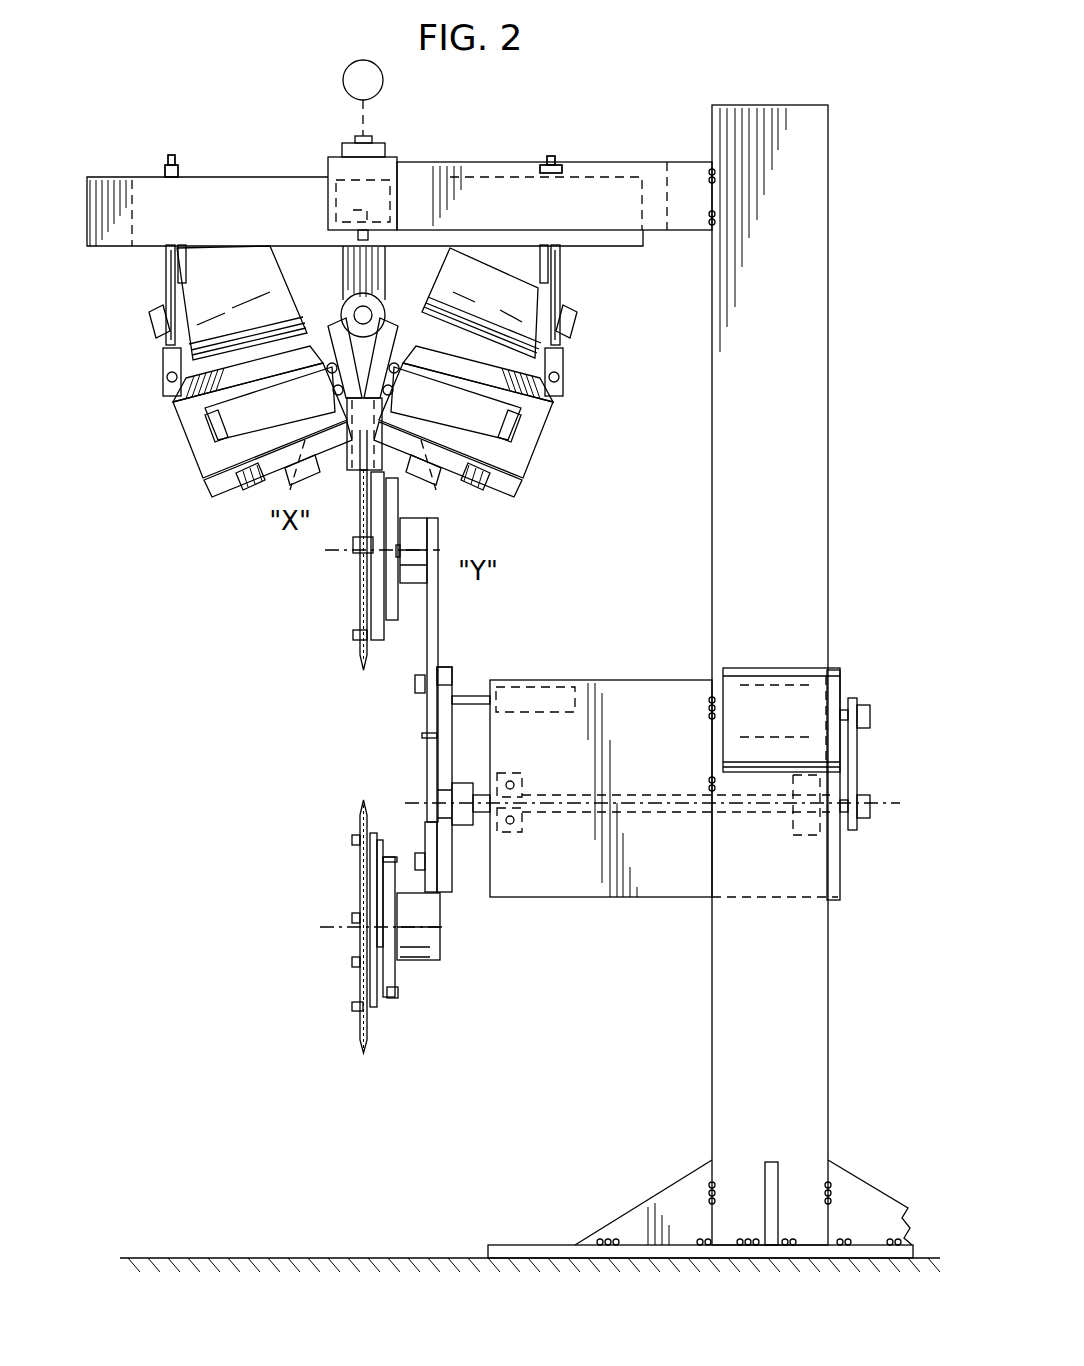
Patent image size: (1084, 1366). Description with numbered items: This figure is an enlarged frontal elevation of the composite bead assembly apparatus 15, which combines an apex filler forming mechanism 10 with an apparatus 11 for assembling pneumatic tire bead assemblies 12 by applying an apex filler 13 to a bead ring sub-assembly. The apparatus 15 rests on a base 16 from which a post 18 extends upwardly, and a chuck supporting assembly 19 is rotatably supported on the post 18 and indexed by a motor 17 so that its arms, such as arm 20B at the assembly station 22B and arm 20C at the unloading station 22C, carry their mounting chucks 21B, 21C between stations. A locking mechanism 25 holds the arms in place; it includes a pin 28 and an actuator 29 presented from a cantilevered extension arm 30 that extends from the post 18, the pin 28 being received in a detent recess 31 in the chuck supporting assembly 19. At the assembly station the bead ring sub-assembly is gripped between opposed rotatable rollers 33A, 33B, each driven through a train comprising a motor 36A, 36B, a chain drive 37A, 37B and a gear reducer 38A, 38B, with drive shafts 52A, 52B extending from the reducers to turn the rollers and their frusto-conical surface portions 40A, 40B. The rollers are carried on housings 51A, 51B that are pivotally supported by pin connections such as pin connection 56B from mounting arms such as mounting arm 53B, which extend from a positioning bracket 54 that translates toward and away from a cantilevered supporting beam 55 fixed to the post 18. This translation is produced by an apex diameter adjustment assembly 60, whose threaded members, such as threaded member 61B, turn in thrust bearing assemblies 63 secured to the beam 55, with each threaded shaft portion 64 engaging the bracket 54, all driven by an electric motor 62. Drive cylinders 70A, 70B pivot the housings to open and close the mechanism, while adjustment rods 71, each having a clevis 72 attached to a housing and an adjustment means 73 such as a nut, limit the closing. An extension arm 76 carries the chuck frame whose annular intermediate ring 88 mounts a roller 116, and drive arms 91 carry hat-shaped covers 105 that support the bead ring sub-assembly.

The apex filler forming mechanism 10 is at (209, 397).
The apparatus for assembling pneumatic tire bead assemblies 11 is at (336, 593).
The pneumatic tire bead assembly 12 is at (358, 882).
The apex filler 13 is at (358, 663).
The bead assembly apparatus 15 is at (520, 688).
The base 16 is at (636, 1218).
The motor 17 is at (770, 690).
The post 18 is at (828, 520).
The chuck supporting assembly 19 is at (380, 932).
The arm 20B is at (399, 752).
The arm 20C is at (432, 955).
The mounting chuck 21B is at (393, 637).
The mounting chuck 21C is at (385, 1028).
The assembly station 22B is at (330, 625).
The unloading station 22C is at (340, 985).
The locking mechanism 25 is at (493, 721).
The pin 28 is at (465, 705).
The actuator 29 is at (560, 688).
The cantilevered extension arm 30 is at (680, 793).
The detent recess 31 is at (446, 665).
The roller 33A is at (290, 500).
The roller 33B is at (455, 500).
The motor 36A is at (237, 270).
The motor 36B is at (490, 265).
The chain drive 37A is at (152, 308).
The chain drive 37B is at (575, 320).
The gear reducer 38A is at (235, 410).
The gear reducer 38B is at (490, 405).
The frusto-conical surface portion 40A is at (265, 500).
The frusto-conical surface portion 40B is at (470, 500).
The housing 51A is at (208, 412).
The housing 51B is at (519, 412).
The drive shaft 52A is at (290, 455).
The drive shaft 52B is at (495, 462).
The mounting arm 53B is at (355, 272).
The positioning bracket 54 is at (240, 185).
The cantilevered supporting beam 55 is at (600, 162).
The pin connection 56B is at (372, 310).
The apex diameter adjustment assembly 60 is at (402, 119).
The threaded member 61B is at (425, 160).
The electric motor 62 is at (345, 68).
The thrust bearing assembly 63 is at (395, 152).
The threaded shaft portion 64 is at (385, 232).
The drive cylinder 70A is at (160, 268).
The drive cylinder 70B is at (565, 273).
The adjustment rod 71 is at (168, 158).
The clevis 72 is at (170, 375).
The adjustment means 73 is at (178, 178).
The extension arm 76 is at (438, 607).
The annular intermediate ring 88 is at (400, 1005).
The drive arm 91 is at (386, 842).
The hat-shaped cover 105 is at (358, 1012).
The roller 116 is at (352, 962).